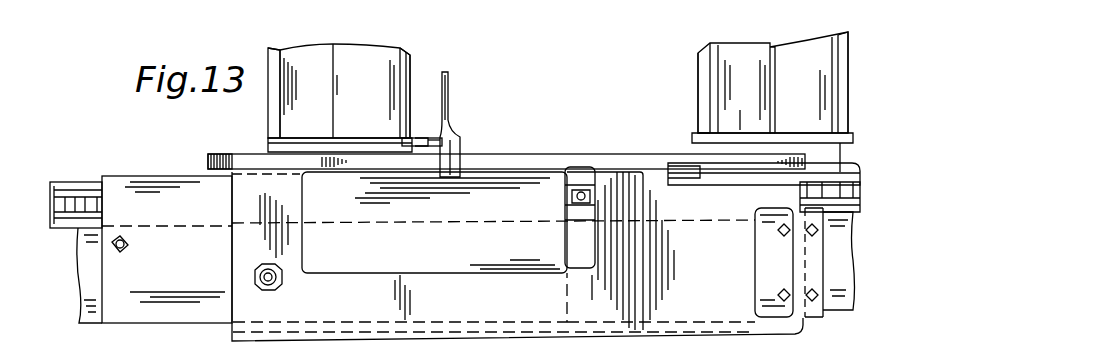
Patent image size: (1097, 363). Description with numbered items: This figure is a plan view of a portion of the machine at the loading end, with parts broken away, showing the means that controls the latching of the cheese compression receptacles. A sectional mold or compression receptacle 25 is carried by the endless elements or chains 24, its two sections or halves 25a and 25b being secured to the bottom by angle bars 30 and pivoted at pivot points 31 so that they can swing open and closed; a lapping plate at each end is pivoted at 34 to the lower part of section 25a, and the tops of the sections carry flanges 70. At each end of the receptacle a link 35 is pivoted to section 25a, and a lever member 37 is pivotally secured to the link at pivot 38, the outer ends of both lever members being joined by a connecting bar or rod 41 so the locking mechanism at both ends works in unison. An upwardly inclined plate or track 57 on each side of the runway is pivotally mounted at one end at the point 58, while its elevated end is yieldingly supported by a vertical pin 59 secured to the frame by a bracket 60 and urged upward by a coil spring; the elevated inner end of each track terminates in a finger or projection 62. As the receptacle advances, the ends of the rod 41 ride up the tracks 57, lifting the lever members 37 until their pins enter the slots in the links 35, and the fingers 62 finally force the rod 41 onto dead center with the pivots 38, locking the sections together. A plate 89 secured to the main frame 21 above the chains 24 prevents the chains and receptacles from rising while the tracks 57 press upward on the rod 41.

The main frame 21 is at (80, 267).
The endless elements or chains 24 is at (88, 180).
The sectional molds or compression receptacles 25 is at (322, 48).
The mold section 25a is at (700, 53).
The mold section 25b is at (410, 52).
The angle bars 30 is at (526, 15).
The pivot points 31 is at (489, 7).
The pivot 34 is at (575, 2).
The link 35 is at (407, 138).
The lever member 37 is at (427, 138).
The pivot 38 is at (422, 135).
The connecting bar or rod 41 is at (450, 100).
The inclined plates or tracks 57 is at (533, 303).
The pivot point 58 is at (805, 318).
The pin 59 is at (258, 288).
The bracket 60 is at (580, 217).
The finger or projection 62 is at (213, 154).
The flanges 70 is at (310, 148).
The plate 89 is at (157, 197).